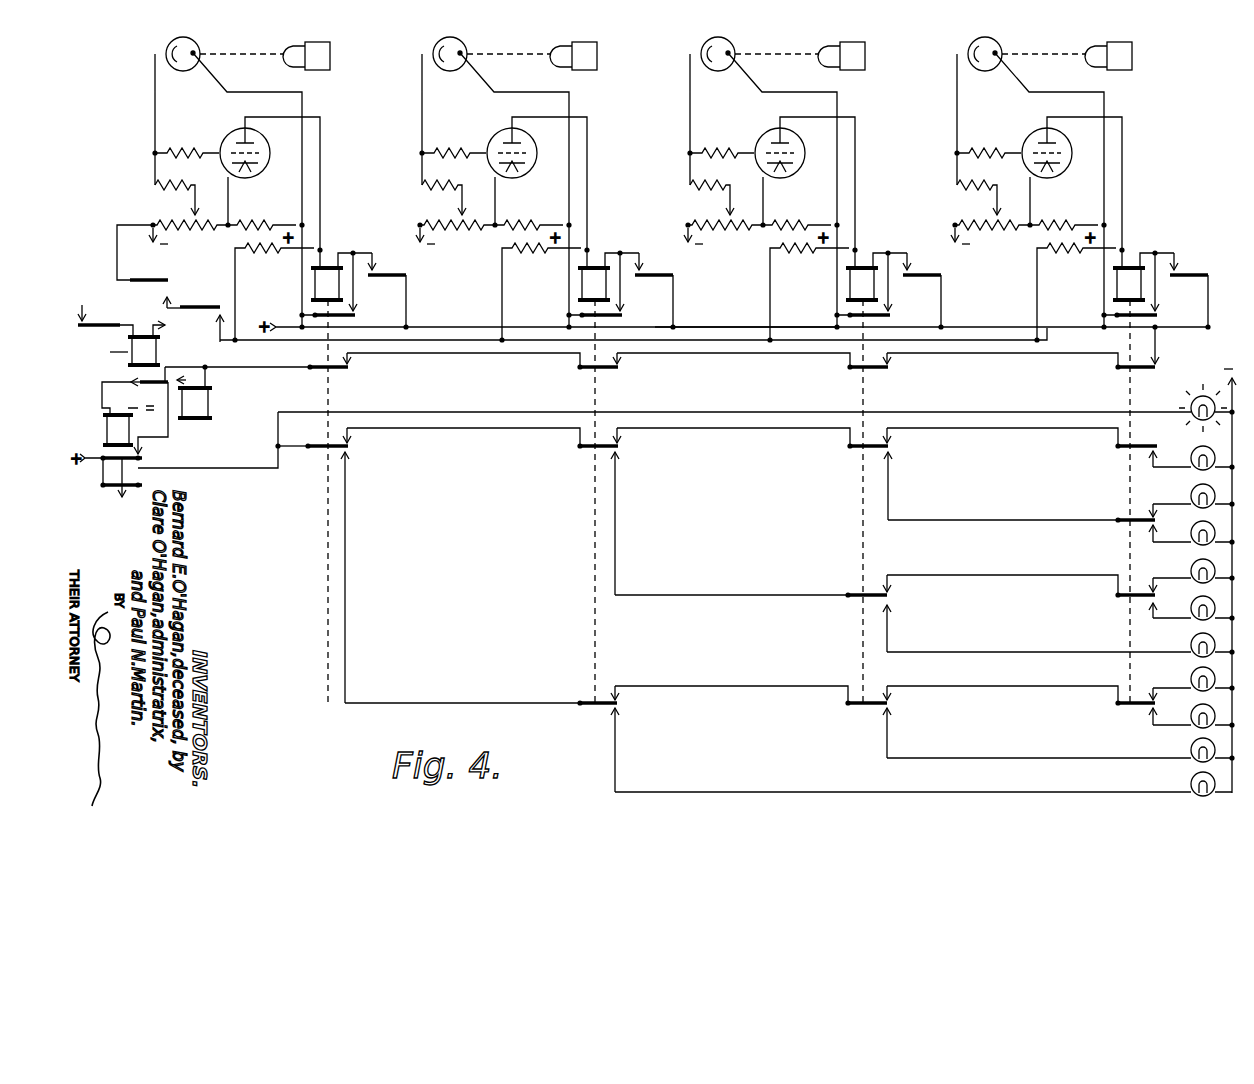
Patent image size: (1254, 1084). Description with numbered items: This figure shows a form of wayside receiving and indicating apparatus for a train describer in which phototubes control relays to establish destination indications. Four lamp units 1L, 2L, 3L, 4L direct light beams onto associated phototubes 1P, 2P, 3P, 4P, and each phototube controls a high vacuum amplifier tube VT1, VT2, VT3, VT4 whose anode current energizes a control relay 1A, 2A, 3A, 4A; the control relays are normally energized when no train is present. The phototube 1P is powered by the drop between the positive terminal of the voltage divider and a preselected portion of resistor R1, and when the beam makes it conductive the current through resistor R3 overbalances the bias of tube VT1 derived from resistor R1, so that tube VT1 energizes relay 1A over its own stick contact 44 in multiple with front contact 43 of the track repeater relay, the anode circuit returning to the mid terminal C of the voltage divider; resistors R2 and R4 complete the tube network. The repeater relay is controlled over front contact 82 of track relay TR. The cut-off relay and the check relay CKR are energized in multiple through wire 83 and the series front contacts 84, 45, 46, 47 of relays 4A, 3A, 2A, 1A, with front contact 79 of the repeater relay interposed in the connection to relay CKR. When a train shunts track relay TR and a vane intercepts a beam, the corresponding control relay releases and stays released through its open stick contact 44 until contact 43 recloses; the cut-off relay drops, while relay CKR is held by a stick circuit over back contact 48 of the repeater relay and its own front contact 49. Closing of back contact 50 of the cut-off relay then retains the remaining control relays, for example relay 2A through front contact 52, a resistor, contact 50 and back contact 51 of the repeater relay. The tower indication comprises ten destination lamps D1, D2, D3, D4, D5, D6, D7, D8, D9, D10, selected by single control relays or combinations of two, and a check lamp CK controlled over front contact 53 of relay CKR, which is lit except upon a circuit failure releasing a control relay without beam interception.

The phototube 1P is at (165, 51).
The phototube 2P is at (467, 50).
The phototube 3P is at (735, 50).
The phototube 4P is at (1002, 50).
The lamp unit 1L is at (328, 52).
The lamp unit 2L is at (591, 48).
The lamp unit 3L is at (859, 48).
The lamp unit 4L is at (1126, 48).
The amplifier tube VT1 is at (229, 128).
The amplifier tube VT2 is at (492, 143).
The amplifier tube VT3 is at (760, 143).
The amplifier tube VT4 is at (1027, 143).
The resistor of the voltage divider R1 is at (188, 215).
The resistor R2 is at (262, 215).
The resistor R3 is at (184, 189).
The resistor R4 is at (187, 143).
The mid terminal of the voltage divider C is at (222, 236).
The control relay 1A is at (312, 289).
The control relay 2A is at (566, 287).
The control relay 3A is at (869, 264).
The control relay 4A is at (1100, 287).
The track relay TR is at (99, 312).
The check relay CKR is at (104, 432).
The front contact of track repeater relay TPR 43 is at (364, 278).
The front (stick) contact of relay 1A 44 is at (352, 314).
The front contact of relay 3A 45 is at (888, 368).
The front contact of relay 2A 46 is at (618, 368).
The front contact of relay 1A 47 is at (348, 368).
The back contact of relay TPR 48 is at (164, 386).
The front contact of relay CKR 49 is at (138, 461).
The back contact of relay COR 50 is at (220, 324).
The back contact of relay TPR 51 is at (151, 295).
The front contact of relay 2A 52 is at (617, 309).
The front contact of check relay CKR 53 is at (140, 486).
The front contact of repeater relay TPR 79 is at (170, 378).
The front contact of track relay TR 82 is at (84, 301).
The wire 83 is at (745, 314).
The front contact of relay 4A 84 is at (1156, 358).
The check lamp CK is at (1188, 401).
The destination lamp D1 is at (1198, 445).
The destination lamp D2 is at (1192, 491).
The destination lamp D3 is at (1196, 531).
The destination lamp D4 is at (1192, 568).
The destination lamp D5 is at (1194, 607).
The destination lamp D6 is at (1192, 643).
The destination lamp D7 is at (1192, 678).
The destination lamp D8 is at (1194, 713).
The destination lamp D9 is at (1192, 748).
The destination lamp D10 is at (1192, 781).